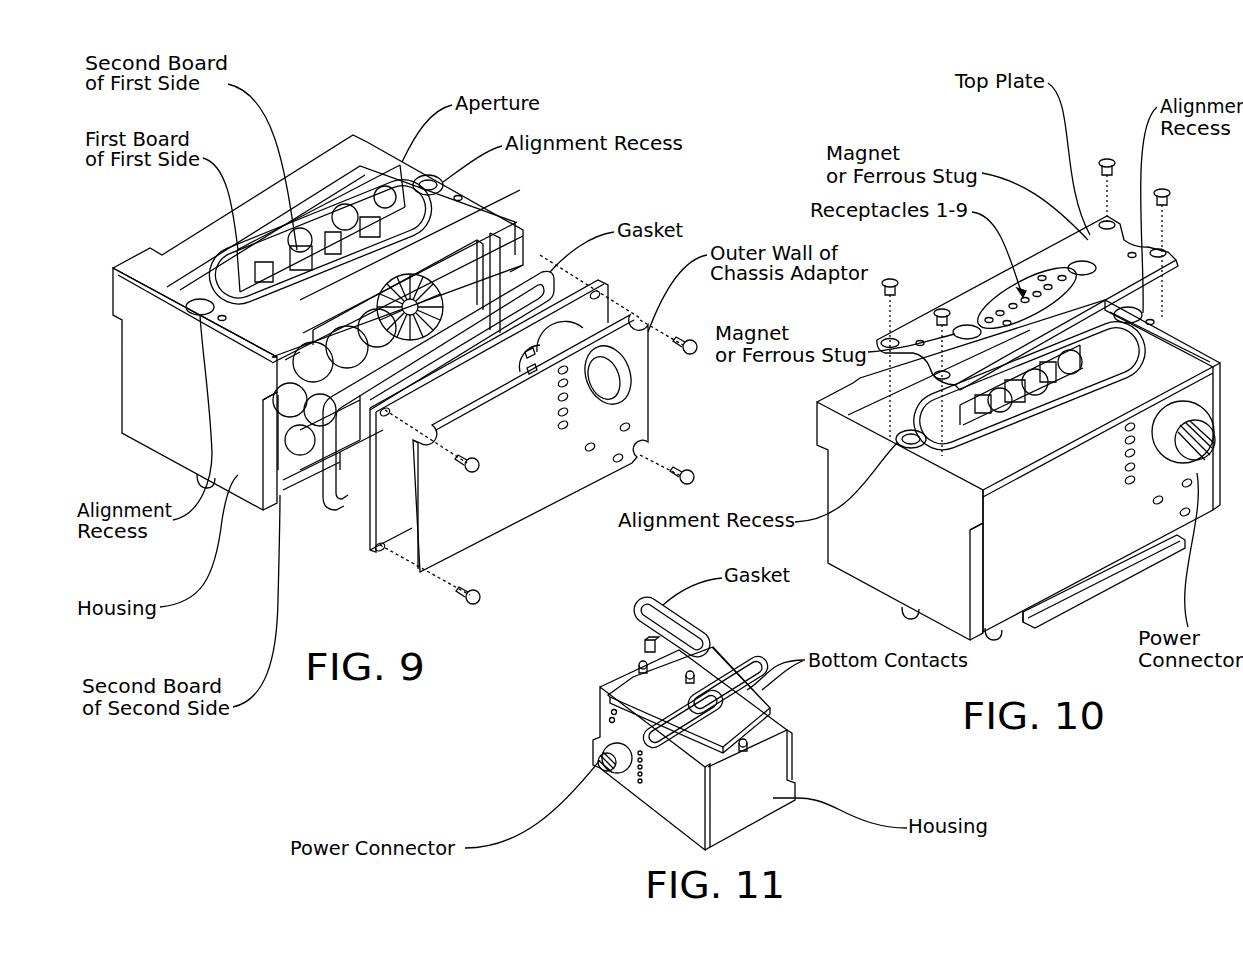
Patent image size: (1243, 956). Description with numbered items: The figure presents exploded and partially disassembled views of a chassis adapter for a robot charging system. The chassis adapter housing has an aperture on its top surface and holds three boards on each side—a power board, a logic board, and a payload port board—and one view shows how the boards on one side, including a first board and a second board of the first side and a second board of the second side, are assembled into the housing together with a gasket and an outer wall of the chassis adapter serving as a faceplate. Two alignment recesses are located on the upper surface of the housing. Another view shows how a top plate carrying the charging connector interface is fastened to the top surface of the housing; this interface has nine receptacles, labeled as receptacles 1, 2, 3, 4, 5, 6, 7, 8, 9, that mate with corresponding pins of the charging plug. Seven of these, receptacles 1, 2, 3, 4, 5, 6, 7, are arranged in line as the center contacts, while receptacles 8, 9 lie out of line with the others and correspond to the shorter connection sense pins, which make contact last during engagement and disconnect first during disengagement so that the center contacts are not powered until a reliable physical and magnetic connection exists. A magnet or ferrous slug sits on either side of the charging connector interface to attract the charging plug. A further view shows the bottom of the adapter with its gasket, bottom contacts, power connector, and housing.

The pin 1 is at (985, 318).
The pin 2 is at (996, 311).
The pin 3 is at (1009, 304).
The pin 4 is at (1026, 302).
The pin 5 is at (1039, 296).
The pin 6 is at (1051, 288).
The pin 7 is at (1065, 279).
The connection sense pin 8 is at (1041, 275).
The connection sense pin 9 is at (1006, 325).